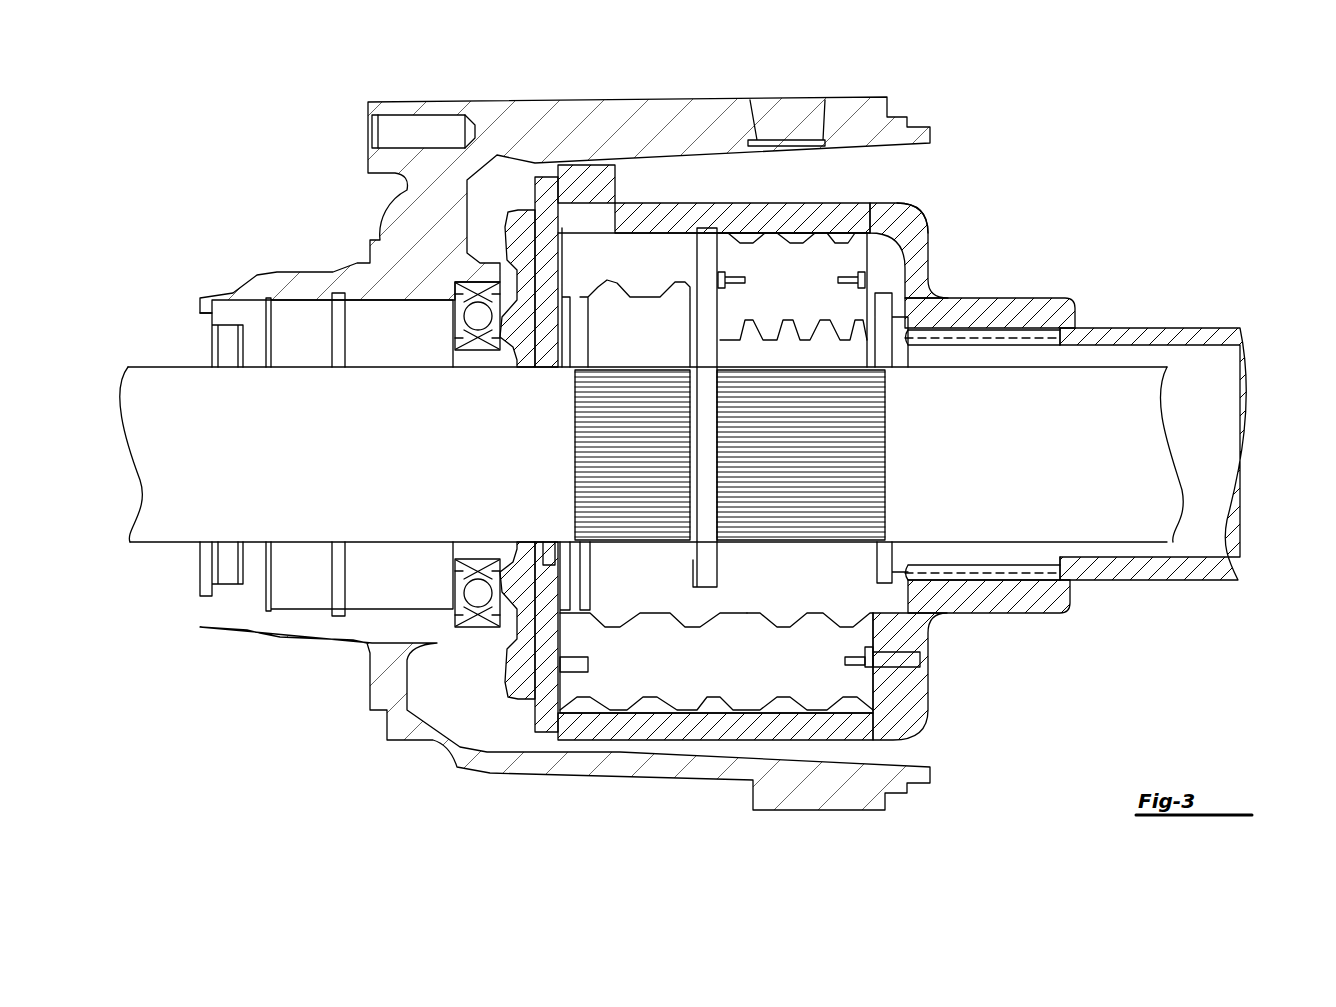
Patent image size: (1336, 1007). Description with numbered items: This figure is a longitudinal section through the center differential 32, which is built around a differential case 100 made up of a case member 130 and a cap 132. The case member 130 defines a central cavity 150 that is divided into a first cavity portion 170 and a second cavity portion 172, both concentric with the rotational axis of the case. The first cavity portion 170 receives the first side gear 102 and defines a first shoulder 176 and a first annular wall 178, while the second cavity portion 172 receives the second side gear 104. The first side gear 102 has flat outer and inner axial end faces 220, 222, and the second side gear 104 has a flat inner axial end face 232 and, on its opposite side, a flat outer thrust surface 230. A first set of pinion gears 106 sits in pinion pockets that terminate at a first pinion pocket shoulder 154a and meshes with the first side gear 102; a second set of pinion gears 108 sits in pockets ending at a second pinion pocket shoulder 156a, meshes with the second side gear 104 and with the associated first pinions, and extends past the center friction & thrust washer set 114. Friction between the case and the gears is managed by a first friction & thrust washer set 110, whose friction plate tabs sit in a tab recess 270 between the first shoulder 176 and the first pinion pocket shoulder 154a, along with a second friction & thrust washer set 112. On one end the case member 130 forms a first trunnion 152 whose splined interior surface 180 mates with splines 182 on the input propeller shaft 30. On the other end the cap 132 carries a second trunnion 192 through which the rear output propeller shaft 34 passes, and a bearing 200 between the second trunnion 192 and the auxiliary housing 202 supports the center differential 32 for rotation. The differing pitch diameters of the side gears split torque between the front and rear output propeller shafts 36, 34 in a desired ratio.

The input propeller shaft 30 is at (1183, 328).
The center differential 32 is at (500, 717).
The rear output propeller shaft 34 is at (168, 375).
The front output propeller shaft 36 is at (1147, 443).
The differential case 100 is at (888, 172).
The first side gear 102 is at (835, 333).
The second side gear 104 is at (612, 293).
The first set of pinion gears 106 is at (835, 238).
The second set of pinion gears 108 is at (680, 676).
The first friction & thrust washer set 110 is at (908, 327).
The second friction & thrust washer set 112 is at (552, 322).
The center friction & thrust washer set 114 is at (690, 342).
The case member 130 is at (788, 212).
The cap 132 is at (540, 180).
The central cavity 150 is at (560, 255).
The first trunnion 152 is at (1038, 297).
The first pinion pocket shoulder 154a is at (905, 228).
The second pinion pocket shoulder 156a is at (873, 680).
The first cavity portion 170 is at (755, 575).
The second cavity portion 172 is at (652, 235).
The first shoulder 176 is at (875, 665).
The first annular wall 178 is at (757, 612).
The splined interior surface 180 is at (1023, 575).
The splines 182 is at (1000, 572).
The second trunnion 192 is at (478, 353).
The bearing 200 is at (468, 612).
The auxiliary housing 202 is at (278, 628).
The outer axial end face 220 is at (848, 598).
The inner axial end face 222 is at (720, 560).
The outer thrust surface 230 is at (598, 578).
The inner axial end face 232 is at (687, 557).
The tab recess 270 is at (868, 312).